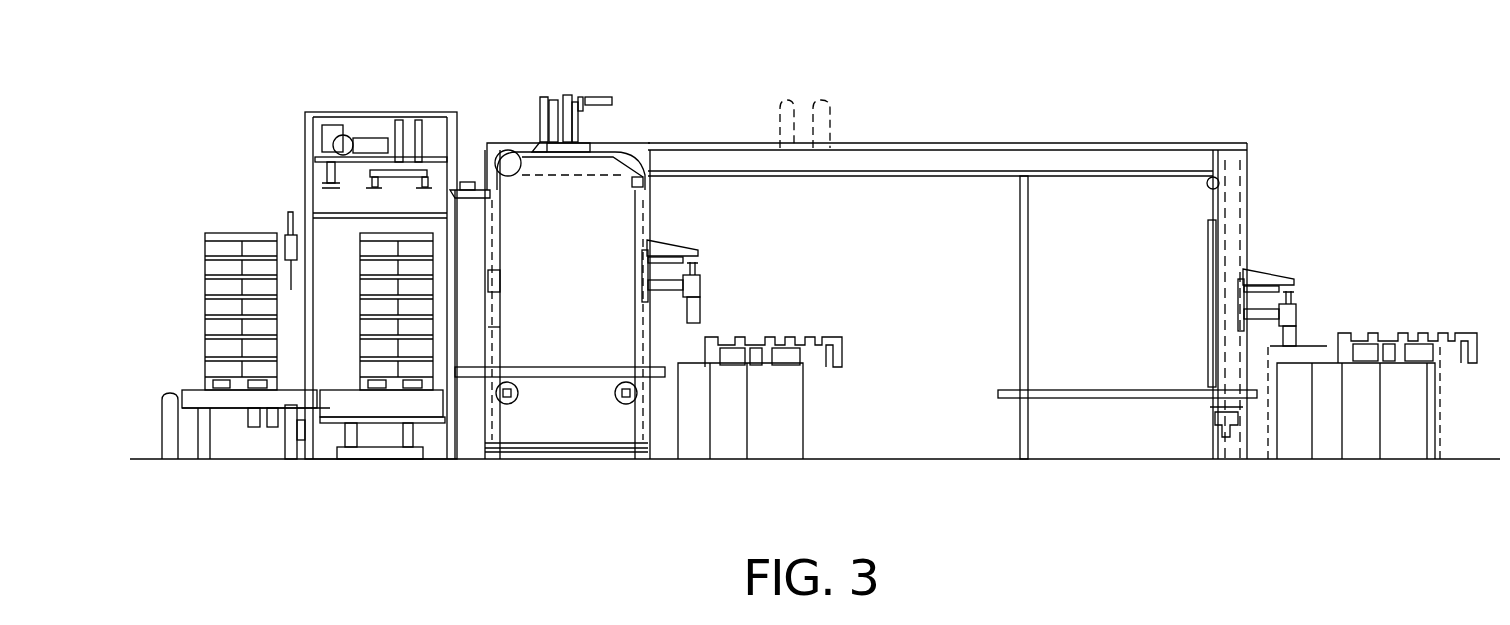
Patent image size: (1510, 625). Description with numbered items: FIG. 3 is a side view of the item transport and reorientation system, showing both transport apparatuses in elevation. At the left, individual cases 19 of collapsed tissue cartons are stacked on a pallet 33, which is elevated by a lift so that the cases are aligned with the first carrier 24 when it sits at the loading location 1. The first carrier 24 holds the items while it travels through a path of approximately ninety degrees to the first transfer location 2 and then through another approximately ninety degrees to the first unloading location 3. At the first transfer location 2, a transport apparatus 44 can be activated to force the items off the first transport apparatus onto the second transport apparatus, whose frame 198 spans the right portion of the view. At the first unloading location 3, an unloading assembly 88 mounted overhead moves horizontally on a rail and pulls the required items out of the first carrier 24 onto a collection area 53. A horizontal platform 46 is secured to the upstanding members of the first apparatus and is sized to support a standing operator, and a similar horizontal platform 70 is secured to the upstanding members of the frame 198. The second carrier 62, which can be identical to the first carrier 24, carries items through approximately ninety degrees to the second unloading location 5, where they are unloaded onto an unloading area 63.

The cases 19 is at (204, 247).
The pallet 33 is at (223, 388).
The loading location 1 is at (478, 265).
The first carrier 24 is at (473, 190).
The first transfer location 2 is at (617, 136).
The transport apparatus 44 is at (588, 93).
The frame 198 is at (1068, 141).
The first unloading location 3 is at (695, 239).
The unloading assembly 88 is at (700, 290).
The second unloading location 5 is at (1280, 264).
The second carrier 62 is at (1280, 277).
The horizontal platform 46 is at (570, 377).
The collection area 53 is at (795, 437).
The horizontal platform 70 is at (1142, 398).
The unloading area 63 is at (1360, 443).